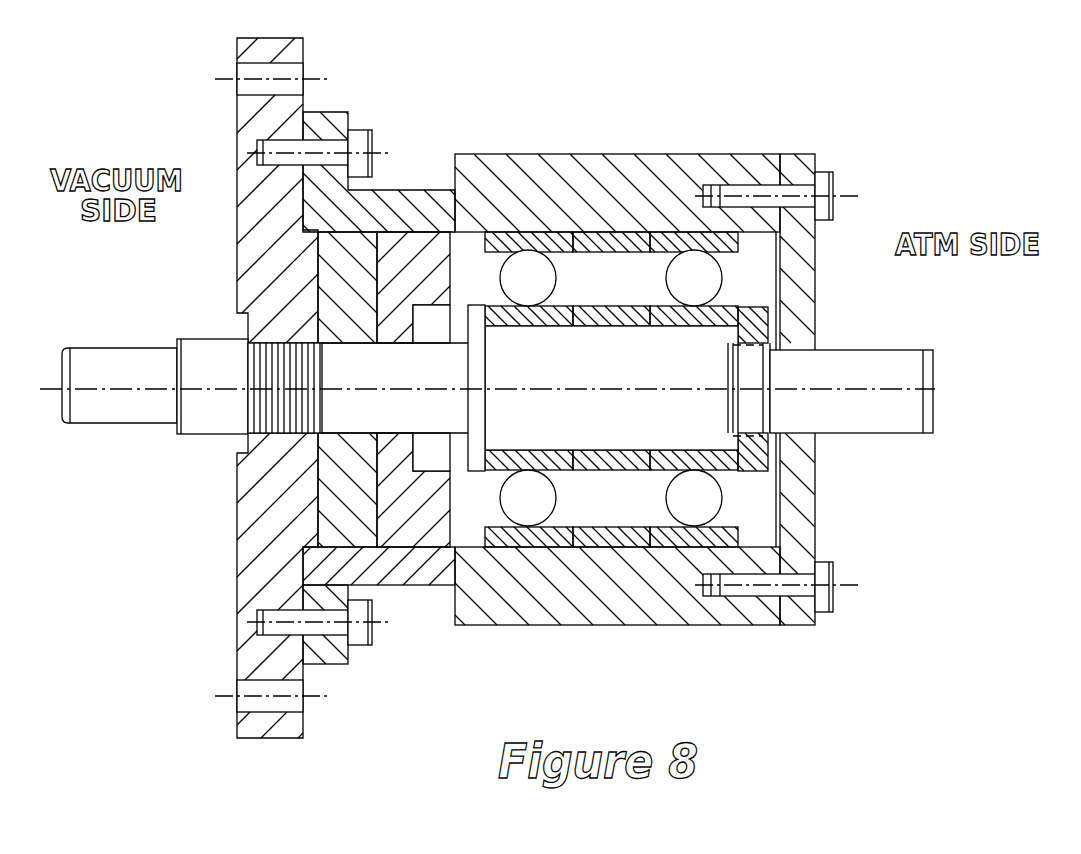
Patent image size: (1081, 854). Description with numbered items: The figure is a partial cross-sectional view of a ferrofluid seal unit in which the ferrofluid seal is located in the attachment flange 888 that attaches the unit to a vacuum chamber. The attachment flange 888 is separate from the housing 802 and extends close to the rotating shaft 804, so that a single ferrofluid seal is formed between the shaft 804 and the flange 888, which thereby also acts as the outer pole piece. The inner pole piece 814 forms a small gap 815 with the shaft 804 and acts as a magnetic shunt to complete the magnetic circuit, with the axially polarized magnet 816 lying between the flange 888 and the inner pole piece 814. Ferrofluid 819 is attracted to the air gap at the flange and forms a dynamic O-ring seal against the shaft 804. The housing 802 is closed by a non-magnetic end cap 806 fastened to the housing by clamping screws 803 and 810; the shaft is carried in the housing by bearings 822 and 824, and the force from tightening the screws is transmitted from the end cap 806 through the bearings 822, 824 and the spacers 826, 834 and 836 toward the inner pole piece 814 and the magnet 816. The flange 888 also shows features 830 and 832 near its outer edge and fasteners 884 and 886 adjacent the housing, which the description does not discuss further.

The housing 802 is at (490, 608).
The clamping screw 803 is at (836, 177).
The rotating shaft 804 is at (870, 349).
The end cap 806 is at (803, 482).
The clamping screw 810 is at (827, 573).
The inner pole piece 814 is at (410, 253).
The small gap 815 is at (326, 345).
The magnet 816 is at (353, 530).
The ferrofluid 819 is at (300, 377).
The bearing 822 is at (537, 537).
The bearing 824 is at (668, 240).
The spacer 826 is at (470, 250).
The mounting hole 830 is at (237, 70).
The mounting hole 832 is at (248, 703).
The spacer 834 is at (610, 550).
The spacer 836 is at (757, 543).
The flange bolt 884 is at (362, 132).
The flange bolt 886 is at (370, 640).
The attachment flange 888 is at (250, 505).